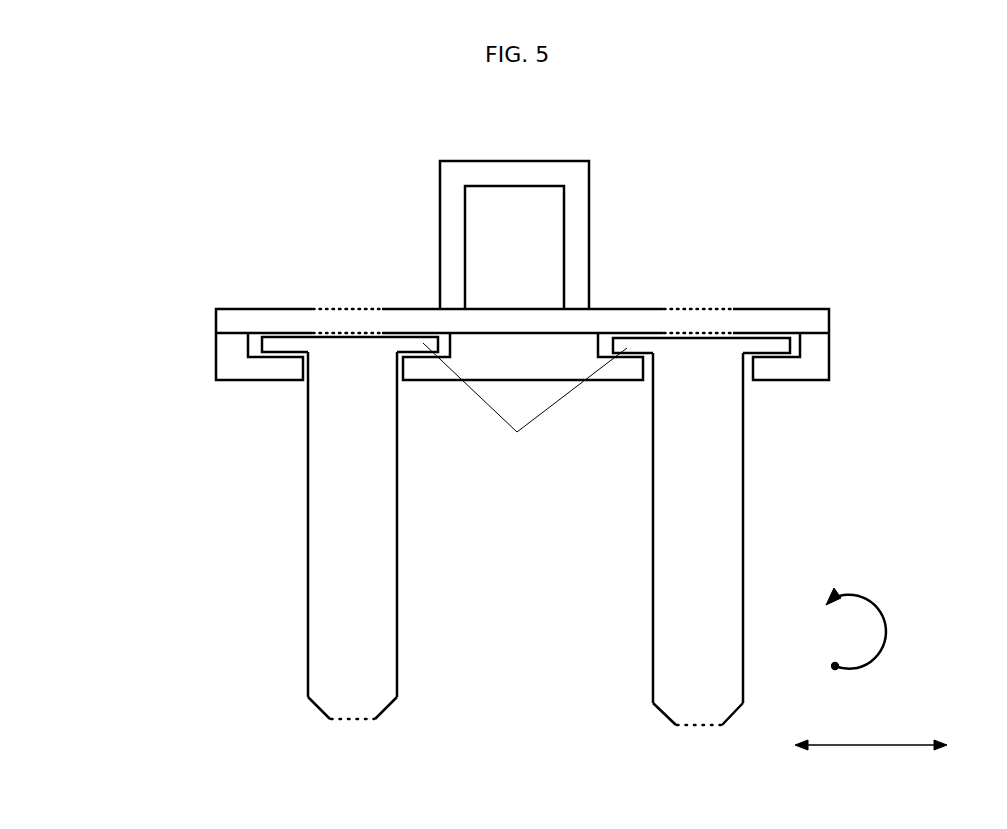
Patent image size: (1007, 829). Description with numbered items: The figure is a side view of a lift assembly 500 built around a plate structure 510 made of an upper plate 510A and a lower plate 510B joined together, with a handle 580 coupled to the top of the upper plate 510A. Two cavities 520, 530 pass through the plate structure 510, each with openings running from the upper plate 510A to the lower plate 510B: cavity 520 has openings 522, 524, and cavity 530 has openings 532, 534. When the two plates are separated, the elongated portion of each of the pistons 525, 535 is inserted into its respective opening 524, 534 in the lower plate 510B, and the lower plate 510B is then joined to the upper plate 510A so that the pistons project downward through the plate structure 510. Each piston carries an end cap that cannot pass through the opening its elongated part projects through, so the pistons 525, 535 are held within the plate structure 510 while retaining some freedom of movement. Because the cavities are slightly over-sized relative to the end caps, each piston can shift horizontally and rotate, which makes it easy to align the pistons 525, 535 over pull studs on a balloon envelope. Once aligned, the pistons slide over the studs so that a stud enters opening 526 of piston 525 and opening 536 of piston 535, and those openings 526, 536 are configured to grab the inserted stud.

The lift assembly 500 is at (968, 66).
The plate structure 510 is at (232, 272).
The upper plate 510A is at (815, 322).
The lower plate 510B is at (833, 353).
The cavity 520 is at (255, 343).
The opening 522 is at (340, 308).
The opening 524 is at (303, 380).
The piston 525 is at (308, 527).
The opening 526 is at (353, 718).
The cavity 530 is at (812, 345).
The opening 532 is at (698, 308).
The opening 534 is at (751, 380).
The piston 535 is at (653, 533).
The opening 536 is at (698, 725).
The handle 580 is at (555, 161).